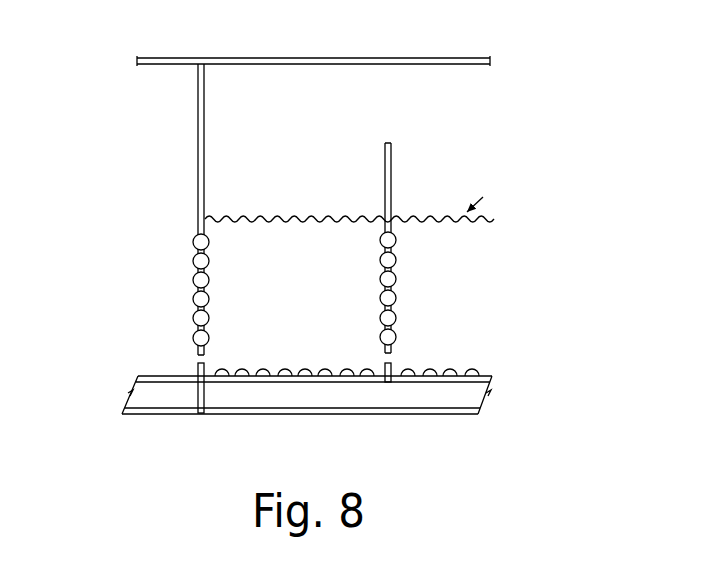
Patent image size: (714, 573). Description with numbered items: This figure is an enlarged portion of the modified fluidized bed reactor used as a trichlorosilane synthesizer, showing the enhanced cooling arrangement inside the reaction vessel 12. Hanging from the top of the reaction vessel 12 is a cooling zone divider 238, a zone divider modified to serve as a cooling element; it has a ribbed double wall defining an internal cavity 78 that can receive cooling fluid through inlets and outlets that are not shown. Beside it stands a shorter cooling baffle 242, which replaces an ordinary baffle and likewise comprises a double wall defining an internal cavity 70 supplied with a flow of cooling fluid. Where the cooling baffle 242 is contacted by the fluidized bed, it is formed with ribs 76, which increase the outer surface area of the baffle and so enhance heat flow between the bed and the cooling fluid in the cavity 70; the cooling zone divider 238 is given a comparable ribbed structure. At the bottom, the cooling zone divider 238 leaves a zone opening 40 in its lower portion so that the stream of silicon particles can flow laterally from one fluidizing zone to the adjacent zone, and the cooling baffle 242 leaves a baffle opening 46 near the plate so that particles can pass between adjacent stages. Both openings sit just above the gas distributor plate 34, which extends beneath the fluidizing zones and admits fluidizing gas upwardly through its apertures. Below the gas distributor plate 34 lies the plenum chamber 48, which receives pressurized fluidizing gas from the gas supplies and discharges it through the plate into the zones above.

The reaction vessel 12 is at (387, 60).
The cooling zone divider 238 is at (166, 209).
The cooling baffle 242 is at (400, 237).
The ribs 76 is at (379, 258).
The internal cavity 78 is at (200, 299).
The internal cavity 70 is at (389, 298).
The zone opening 40 is at (195, 356).
The baffle opening 46 is at (396, 356).
The gas distributor plate 34 is at (349, 411).
The plenum chamber 48 is at (293, 393).